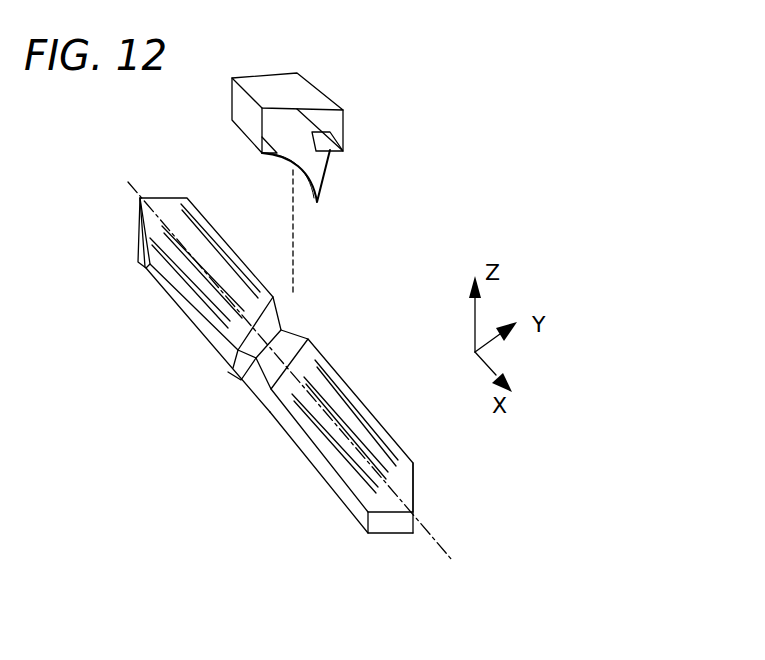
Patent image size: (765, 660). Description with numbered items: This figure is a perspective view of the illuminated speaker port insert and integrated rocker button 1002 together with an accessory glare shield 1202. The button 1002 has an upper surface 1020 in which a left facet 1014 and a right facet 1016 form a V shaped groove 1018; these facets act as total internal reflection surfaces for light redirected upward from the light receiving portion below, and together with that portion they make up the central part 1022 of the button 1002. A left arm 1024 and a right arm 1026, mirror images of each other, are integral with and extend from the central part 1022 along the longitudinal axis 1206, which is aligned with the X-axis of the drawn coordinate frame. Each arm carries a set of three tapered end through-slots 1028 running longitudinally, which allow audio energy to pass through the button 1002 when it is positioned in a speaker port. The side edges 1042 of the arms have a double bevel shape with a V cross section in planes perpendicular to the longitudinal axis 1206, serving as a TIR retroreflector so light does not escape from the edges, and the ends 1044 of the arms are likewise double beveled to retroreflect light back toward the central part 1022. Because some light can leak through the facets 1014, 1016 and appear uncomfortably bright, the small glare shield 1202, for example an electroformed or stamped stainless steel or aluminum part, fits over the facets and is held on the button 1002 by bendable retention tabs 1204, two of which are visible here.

The illuminated speaker port insert and integrated rocker button 1002 is at (283, 387).
The left facet 1014 is at (236, 357).
The right facet 1016 is at (339, 432).
The V shaped groove 1018 is at (258, 370).
The upper surface 1020 is at (186, 255).
The central part 1022 is at (266, 325).
The left arm 1024 is at (143, 266).
The right arm 1026 is at (339, 499).
The tapered end through-slots 1028 is at (342, 420).
The side edges 1042 is at (303, 455).
The ends 1044 is at (140, 232).
The glare shield 1202 is at (343, 115).
The bendable retention tabs 1204 is at (312, 188).
The longitudinal axis 1206 is at (436, 552).